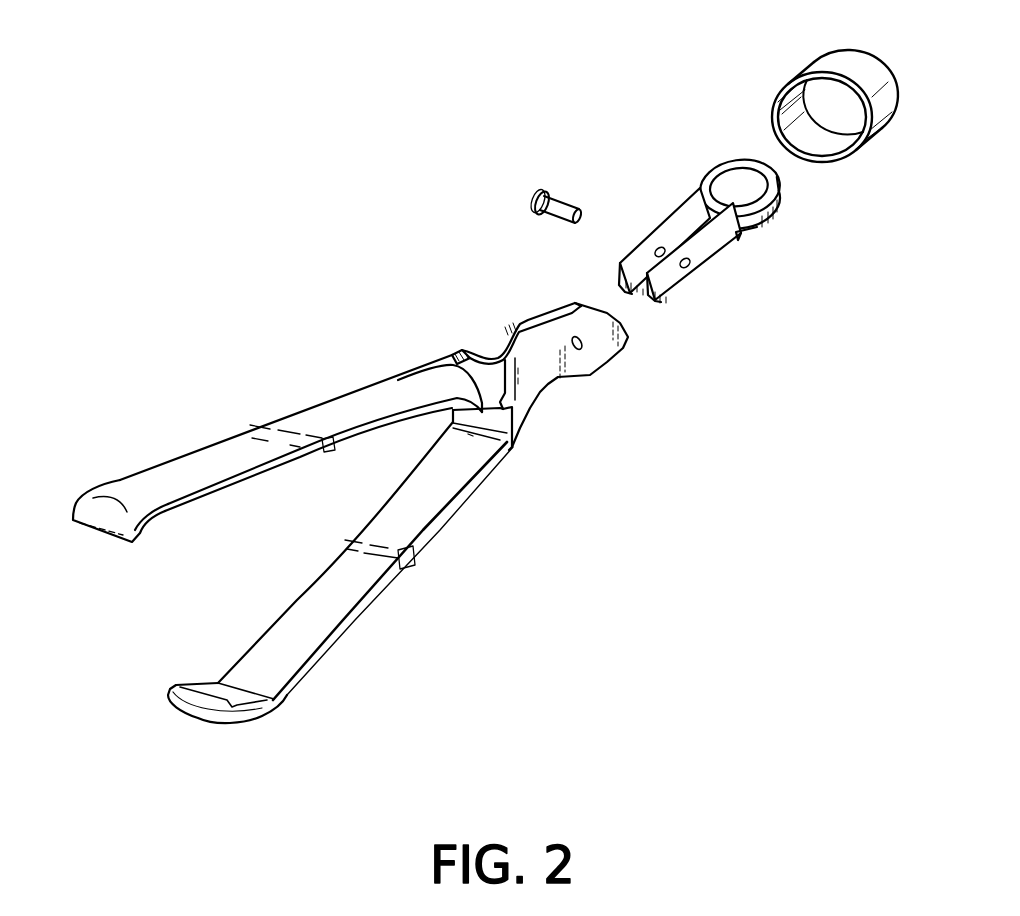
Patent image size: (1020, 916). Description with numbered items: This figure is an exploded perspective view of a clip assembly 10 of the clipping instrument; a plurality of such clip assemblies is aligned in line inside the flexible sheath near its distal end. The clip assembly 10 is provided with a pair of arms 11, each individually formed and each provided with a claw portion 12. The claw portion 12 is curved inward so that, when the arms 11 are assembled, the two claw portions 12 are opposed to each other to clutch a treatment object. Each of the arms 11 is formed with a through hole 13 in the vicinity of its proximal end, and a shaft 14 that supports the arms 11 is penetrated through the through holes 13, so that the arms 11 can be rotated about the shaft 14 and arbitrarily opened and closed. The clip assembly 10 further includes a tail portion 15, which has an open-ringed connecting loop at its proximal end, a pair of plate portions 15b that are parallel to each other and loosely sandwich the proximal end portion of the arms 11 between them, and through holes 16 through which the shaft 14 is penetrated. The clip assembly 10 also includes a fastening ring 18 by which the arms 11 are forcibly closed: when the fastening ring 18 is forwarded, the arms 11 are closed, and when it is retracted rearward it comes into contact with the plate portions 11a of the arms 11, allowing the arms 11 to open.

The clip assembly 10 is at (356, 258).
The arm 11 is at (240, 440).
The plate portion 11a is at (583, 355).
The claw portion 12 is at (100, 524).
The through hole 13 is at (580, 348).
The shaft 14 is at (563, 207).
The tail portion 15 is at (740, 211).
The plate portion 15b is at (705, 243).
The through hole 16 is at (690, 264).
The fastening ring 18 is at (852, 66).